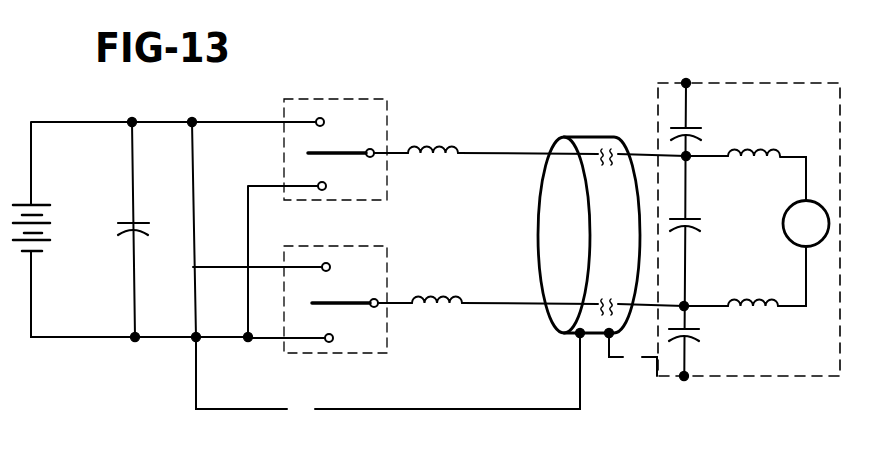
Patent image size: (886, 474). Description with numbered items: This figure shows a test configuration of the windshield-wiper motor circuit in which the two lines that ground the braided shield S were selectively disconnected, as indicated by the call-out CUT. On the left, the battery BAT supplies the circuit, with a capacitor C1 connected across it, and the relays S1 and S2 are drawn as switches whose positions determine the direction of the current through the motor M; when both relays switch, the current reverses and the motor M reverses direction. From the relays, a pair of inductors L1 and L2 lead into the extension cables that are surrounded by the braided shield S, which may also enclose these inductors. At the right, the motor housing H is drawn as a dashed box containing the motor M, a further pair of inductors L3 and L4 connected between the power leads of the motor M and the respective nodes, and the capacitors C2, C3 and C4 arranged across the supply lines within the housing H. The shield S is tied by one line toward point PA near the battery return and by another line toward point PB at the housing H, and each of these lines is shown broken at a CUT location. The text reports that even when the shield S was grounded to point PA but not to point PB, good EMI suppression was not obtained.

The battery BAT is at (56, 228).
The capacitor C1 is at (146, 228).
The relay S1 is at (346, 149).
The relay S2 is at (348, 299).
The inductor L1 is at (433, 132).
The inductor L2 is at (437, 283).
The braided shield S is at (594, 136).
The motor housing H is at (762, 381).
The capacitor C2 is at (699, 131).
The capacitor C3 is at (700, 335).
The capacitor C4 is at (701, 224).
The inductor L3 is at (754, 135).
The inductor L4 is at (753, 285).
The electric motor M is at (806, 224).
The point PA is at (189, 343).
The point PB is at (656, 360).
The call-out CUT is at (302, 413).